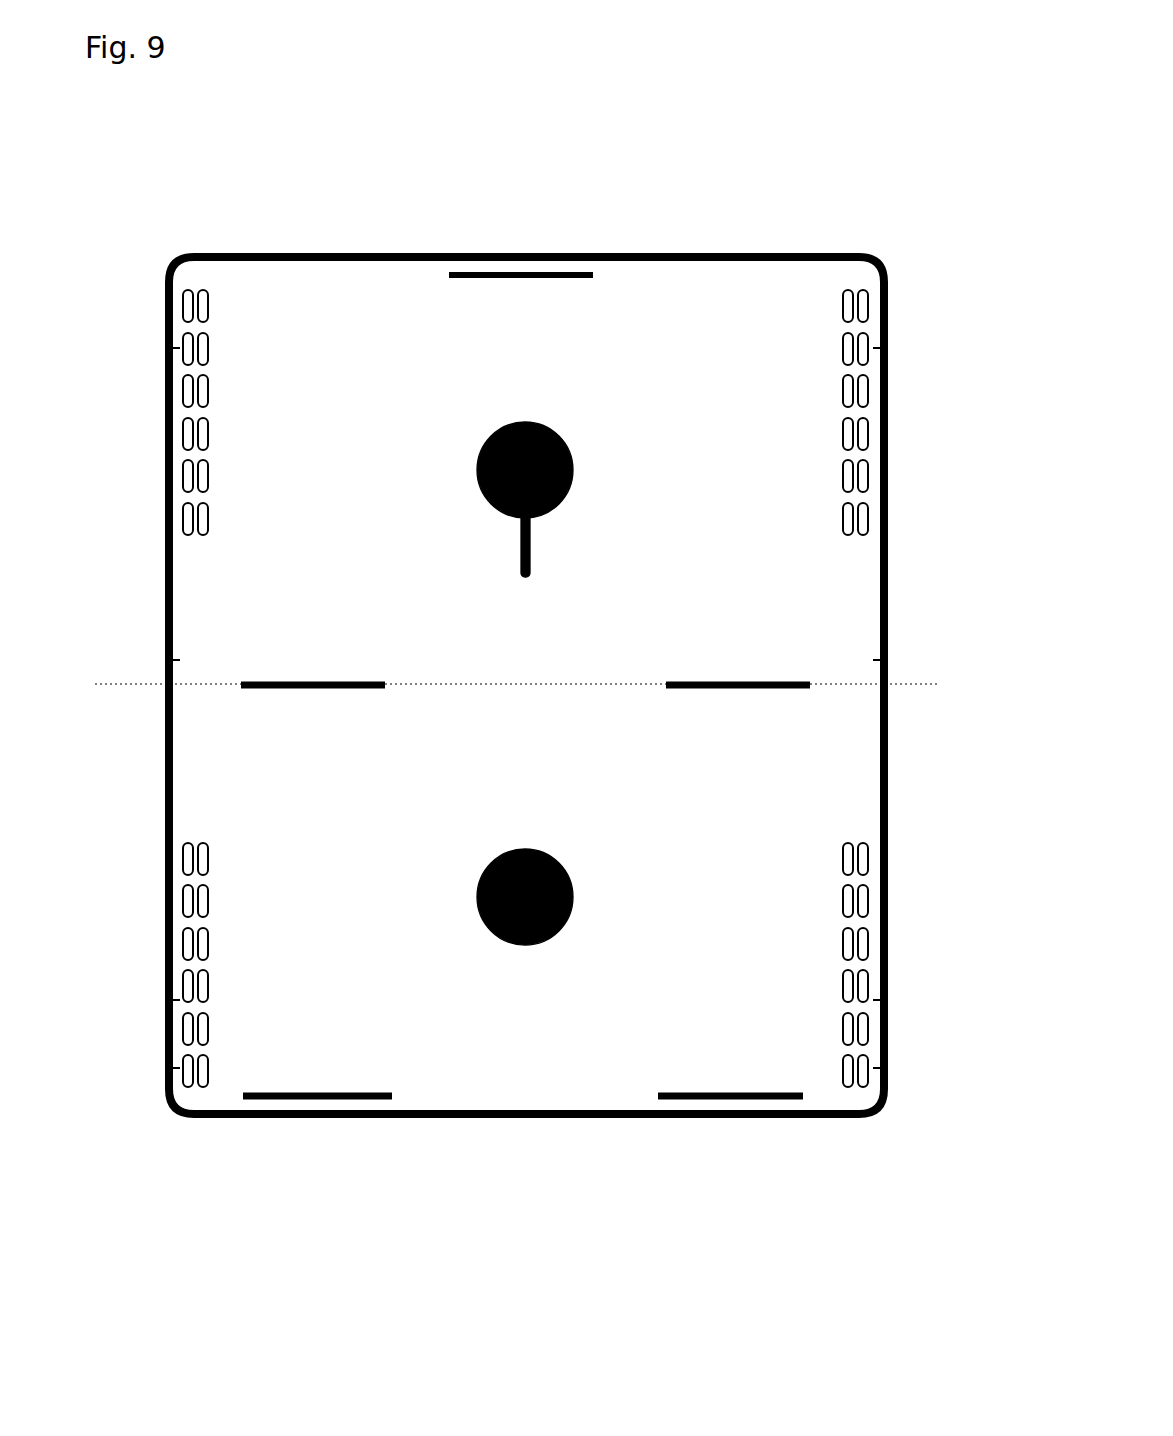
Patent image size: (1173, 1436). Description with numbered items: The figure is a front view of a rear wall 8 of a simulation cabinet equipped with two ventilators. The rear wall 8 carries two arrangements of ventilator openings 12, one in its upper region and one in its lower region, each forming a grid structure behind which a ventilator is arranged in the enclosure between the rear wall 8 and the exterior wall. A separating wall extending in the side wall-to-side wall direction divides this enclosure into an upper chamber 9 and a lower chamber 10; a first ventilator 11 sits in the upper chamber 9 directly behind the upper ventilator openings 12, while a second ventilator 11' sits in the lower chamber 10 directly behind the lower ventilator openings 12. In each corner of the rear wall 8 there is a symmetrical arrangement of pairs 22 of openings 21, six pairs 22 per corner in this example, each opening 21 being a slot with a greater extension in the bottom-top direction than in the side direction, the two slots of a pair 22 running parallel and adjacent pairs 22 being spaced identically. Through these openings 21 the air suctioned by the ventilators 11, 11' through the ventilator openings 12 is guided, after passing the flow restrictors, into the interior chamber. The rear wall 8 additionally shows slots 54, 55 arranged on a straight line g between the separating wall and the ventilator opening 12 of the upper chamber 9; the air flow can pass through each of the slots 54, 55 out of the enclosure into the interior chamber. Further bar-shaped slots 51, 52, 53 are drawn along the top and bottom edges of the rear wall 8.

The rear wall 8 is at (476, 557).
The upper chamber 9 is at (245, 603).
The lower chamber 10 is at (292, 742).
The ventilator 11 is at (731, 522).
The second ventilator 11' is at (726, 849).
The ventilator openings 12 is at (731, 668).
The opening 21 is at (205, 295).
The pair of openings 22 is at (850, 292).
The top bar / slot 51 is at (485, 268).
The bottom right bar / slot 52 is at (728, 1115).
The bottom left bar / slot 53 is at (285, 1125).
The slot 54 is at (308, 684).
The slot 55 is at (775, 683).
The straight line g is at (455, 690).